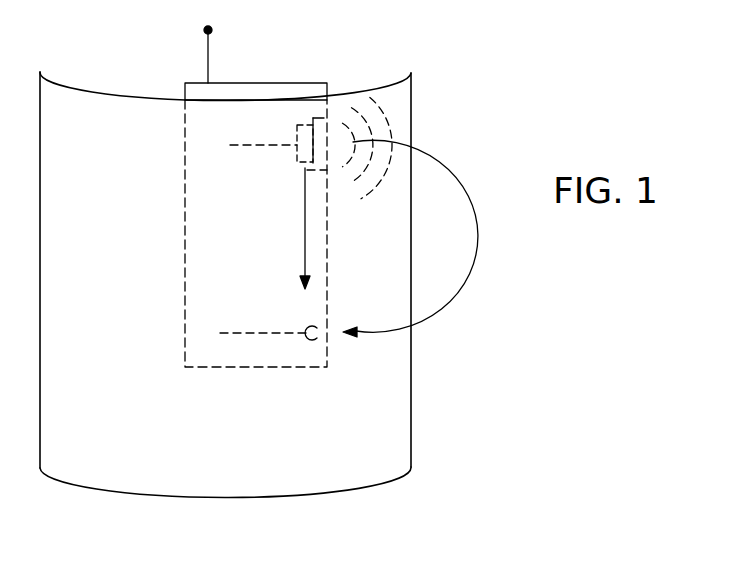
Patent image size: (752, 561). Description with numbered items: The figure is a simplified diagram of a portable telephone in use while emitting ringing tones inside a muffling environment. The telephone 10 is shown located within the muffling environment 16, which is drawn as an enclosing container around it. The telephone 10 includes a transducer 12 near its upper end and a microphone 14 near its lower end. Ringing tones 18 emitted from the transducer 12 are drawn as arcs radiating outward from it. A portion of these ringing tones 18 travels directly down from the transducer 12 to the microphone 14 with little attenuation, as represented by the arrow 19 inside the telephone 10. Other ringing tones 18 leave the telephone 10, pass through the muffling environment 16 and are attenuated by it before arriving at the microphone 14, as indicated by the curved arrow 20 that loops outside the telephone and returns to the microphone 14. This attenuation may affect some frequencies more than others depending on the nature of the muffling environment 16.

The telephone 10 is at (185, 136).
The transducer 12 is at (328, 122).
The microphone 14 is at (316, 341).
The muffling environment 16 is at (412, 343).
The ringing tones 18 is at (372, 137).
The arrow 19 is at (305, 207).
The arrow 20 is at (465, 247).